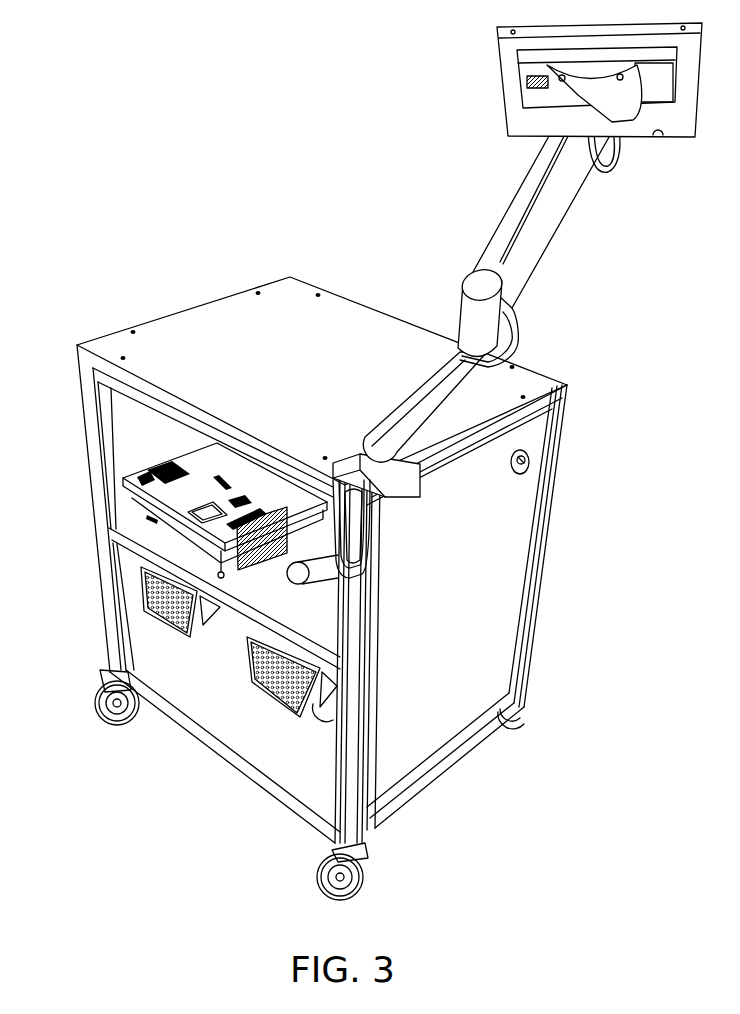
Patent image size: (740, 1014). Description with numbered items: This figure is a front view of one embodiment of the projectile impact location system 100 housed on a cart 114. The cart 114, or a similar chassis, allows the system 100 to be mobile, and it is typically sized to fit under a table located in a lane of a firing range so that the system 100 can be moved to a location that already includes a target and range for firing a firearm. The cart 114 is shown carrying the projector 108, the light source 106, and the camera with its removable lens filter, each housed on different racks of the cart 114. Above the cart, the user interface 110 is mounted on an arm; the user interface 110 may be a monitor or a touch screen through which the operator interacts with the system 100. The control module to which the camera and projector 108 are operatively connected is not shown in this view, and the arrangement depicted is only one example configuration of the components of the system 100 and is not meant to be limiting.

The projectile impact location system 100 is at (358, 461).
The light source 106 is at (162, 625).
The projector 108 is at (133, 493).
The user interface 110 is at (497, 58).
The cart 114 is at (158, 347).